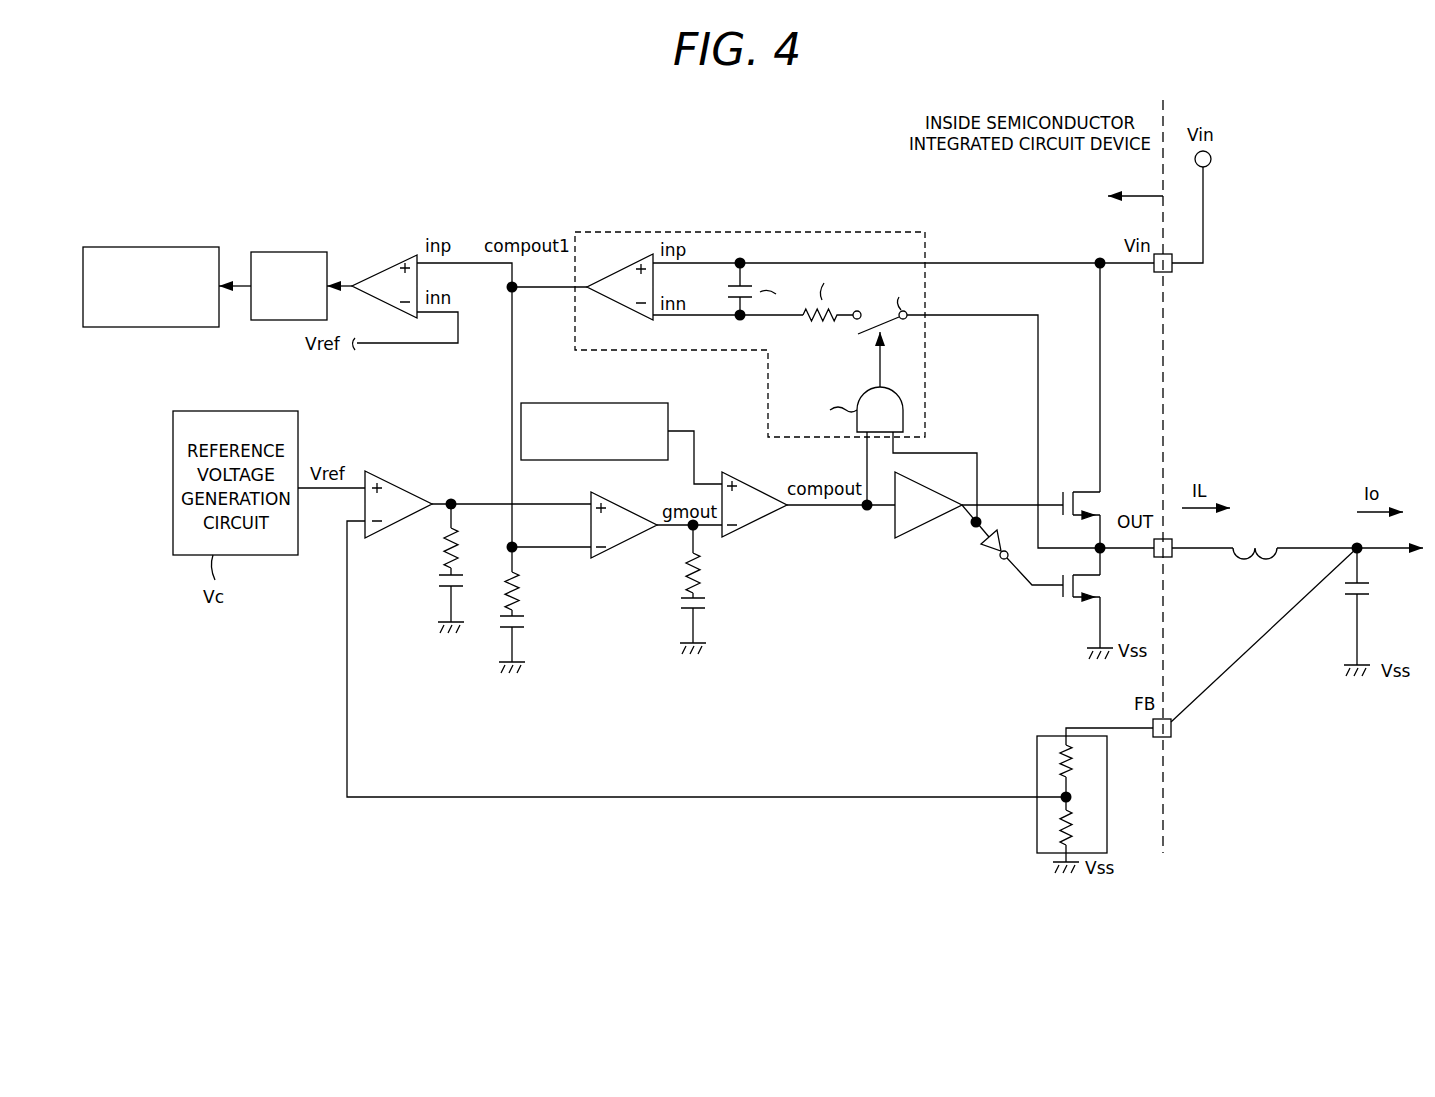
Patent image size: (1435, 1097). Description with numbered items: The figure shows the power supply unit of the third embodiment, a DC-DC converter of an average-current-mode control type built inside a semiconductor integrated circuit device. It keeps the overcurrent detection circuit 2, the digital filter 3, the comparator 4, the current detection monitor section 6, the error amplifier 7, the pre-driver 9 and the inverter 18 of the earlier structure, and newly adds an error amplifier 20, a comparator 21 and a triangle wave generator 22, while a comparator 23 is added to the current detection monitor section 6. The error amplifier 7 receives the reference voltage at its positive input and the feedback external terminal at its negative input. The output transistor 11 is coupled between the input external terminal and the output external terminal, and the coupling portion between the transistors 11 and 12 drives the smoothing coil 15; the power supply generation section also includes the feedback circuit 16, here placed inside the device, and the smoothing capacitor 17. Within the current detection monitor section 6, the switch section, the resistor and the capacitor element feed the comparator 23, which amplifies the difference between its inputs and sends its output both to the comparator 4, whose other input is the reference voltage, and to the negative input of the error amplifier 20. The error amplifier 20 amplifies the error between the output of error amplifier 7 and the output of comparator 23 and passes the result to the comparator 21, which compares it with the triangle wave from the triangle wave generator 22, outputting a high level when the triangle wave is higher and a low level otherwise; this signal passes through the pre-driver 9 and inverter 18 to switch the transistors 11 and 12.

The overcurrent detection circuit 2 is at (186, 247).
The digital filter 3 is at (307, 252).
The comparator 4 is at (386, 262).
The current detection monitor section 6 is at (910, 232).
The error amplifier 7 is at (398, 485).
The pre-driver 9 is at (925, 528).
The transistor 11 is at (1085, 492).
The transistor 12 is at (1080, 600).
The smoothing coil 15 is at (1267, 543).
The feedback circuit 16 is at (1037, 828).
The smoothing capacitor 17 is at (1362, 597).
The inverter 18 is at (997, 552).
The error amplifier 20 is at (633, 535).
The comparator 21 is at (760, 522).
The triangle wave generator 22 is at (668, 412).
The comparator 23 is at (603, 275).